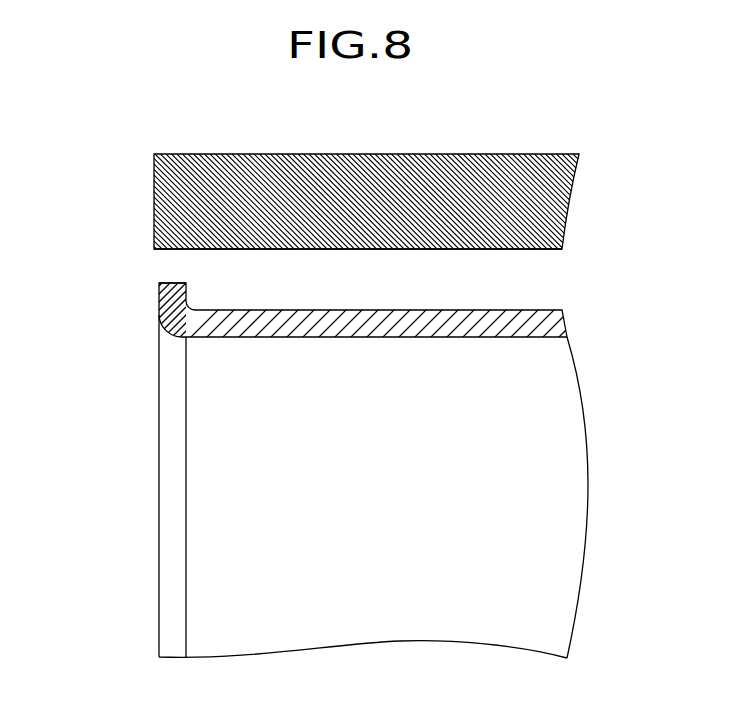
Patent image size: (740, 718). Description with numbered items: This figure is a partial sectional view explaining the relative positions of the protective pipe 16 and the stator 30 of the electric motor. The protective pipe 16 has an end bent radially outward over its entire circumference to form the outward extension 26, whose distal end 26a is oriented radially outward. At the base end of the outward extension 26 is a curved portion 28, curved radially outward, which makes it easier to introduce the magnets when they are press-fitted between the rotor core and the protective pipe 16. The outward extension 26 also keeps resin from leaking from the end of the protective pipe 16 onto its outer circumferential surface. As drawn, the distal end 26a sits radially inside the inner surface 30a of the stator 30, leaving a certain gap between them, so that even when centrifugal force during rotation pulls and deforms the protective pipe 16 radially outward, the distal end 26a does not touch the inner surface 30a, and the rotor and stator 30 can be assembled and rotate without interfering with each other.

The protective pipe 16 is at (120, 445).
The outward extension 26 is at (160, 297).
The distal end of the outward extension 26a is at (173, 283).
The curved portion 28 is at (160, 340).
The stator 30 is at (153, 213).
The inner surface of the stator 30a is at (530, 250).